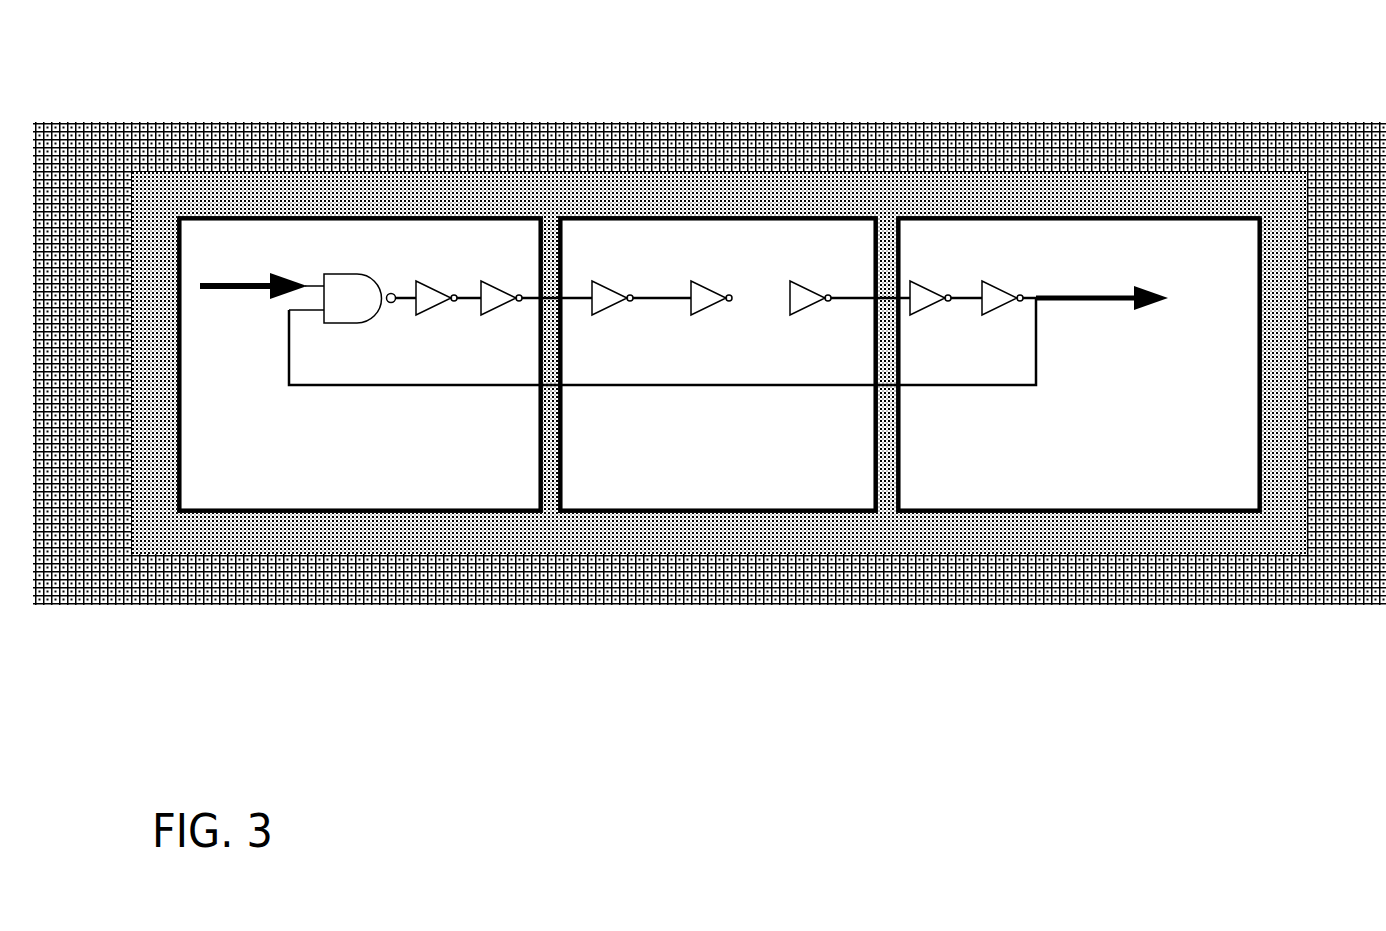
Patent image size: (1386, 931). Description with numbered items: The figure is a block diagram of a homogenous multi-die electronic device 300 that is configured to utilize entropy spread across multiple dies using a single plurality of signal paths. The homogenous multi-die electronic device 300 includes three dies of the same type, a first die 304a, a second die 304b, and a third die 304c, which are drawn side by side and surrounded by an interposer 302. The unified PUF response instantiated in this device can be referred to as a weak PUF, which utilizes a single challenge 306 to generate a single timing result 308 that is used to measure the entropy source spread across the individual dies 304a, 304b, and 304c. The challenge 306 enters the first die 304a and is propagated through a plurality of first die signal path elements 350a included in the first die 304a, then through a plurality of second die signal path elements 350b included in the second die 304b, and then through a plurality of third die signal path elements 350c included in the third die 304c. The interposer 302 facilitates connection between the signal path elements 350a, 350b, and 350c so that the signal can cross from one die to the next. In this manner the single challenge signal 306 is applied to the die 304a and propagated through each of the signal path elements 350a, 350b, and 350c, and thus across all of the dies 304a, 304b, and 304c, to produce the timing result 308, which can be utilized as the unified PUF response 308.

The homogenous multi-die electronic device 300 is at (127, 612).
The interposer 302 is at (158, 165).
The first die 304a is at (375, 210).
The second die 304b is at (730, 210).
The third die 304c is at (1127, 210).
The challenge 306 is at (226, 283).
The timing result 308 is at (1106, 296).
The first die signal path elements 350a is at (360, 276).
The second die signal path elements 350b is at (597, 280).
The third die signal path elements 350c is at (926, 282).